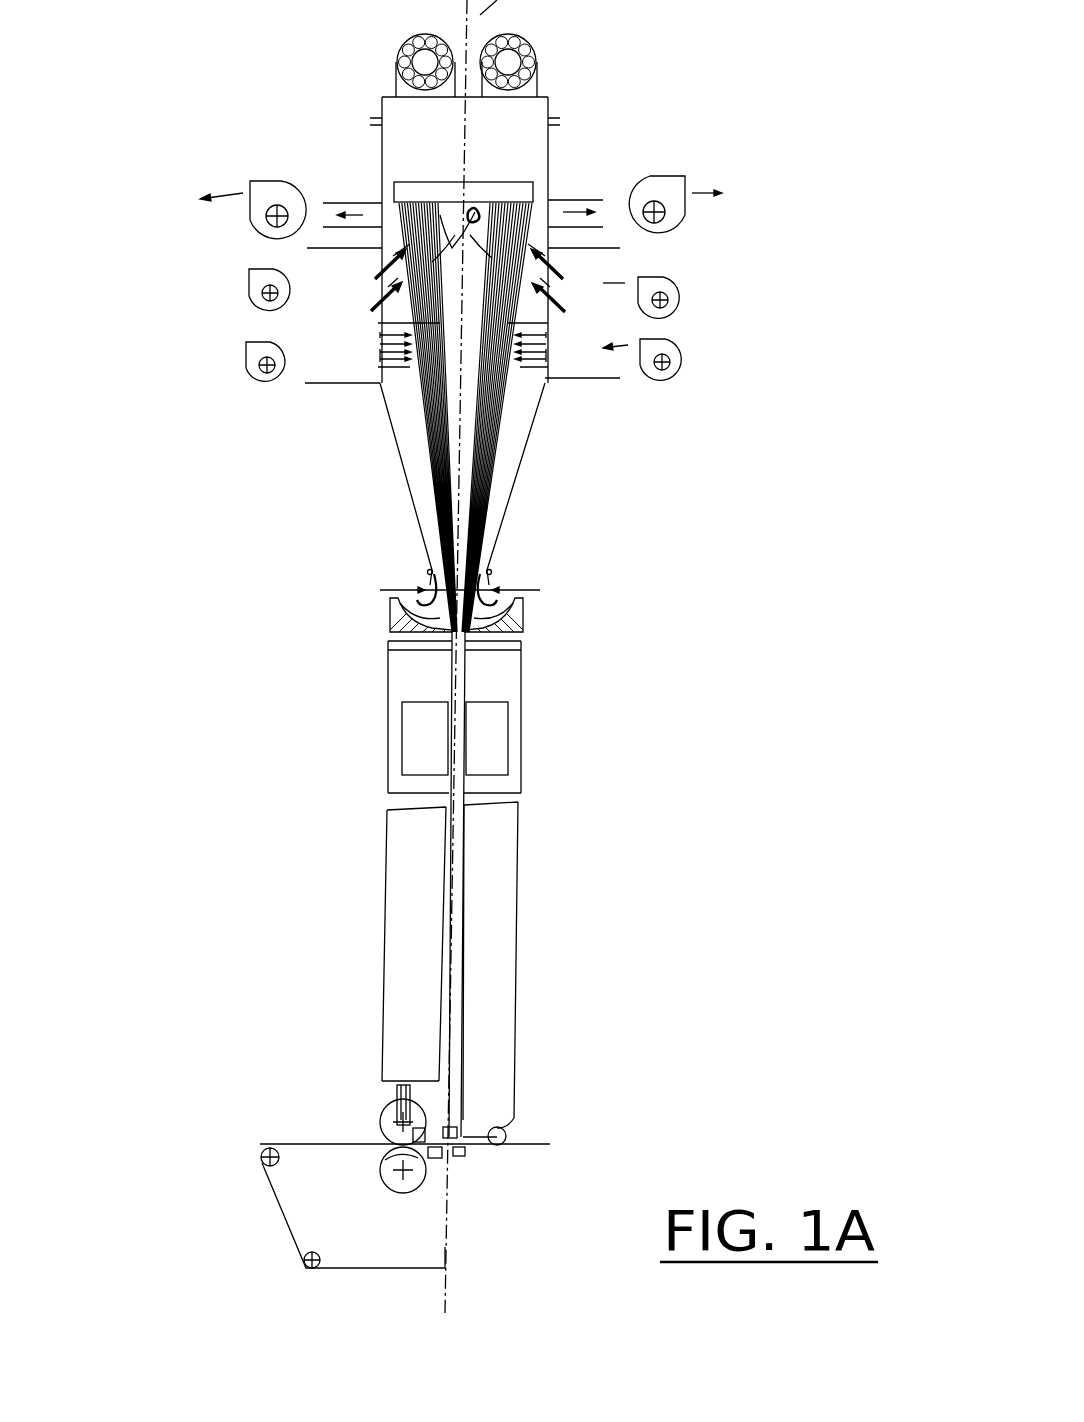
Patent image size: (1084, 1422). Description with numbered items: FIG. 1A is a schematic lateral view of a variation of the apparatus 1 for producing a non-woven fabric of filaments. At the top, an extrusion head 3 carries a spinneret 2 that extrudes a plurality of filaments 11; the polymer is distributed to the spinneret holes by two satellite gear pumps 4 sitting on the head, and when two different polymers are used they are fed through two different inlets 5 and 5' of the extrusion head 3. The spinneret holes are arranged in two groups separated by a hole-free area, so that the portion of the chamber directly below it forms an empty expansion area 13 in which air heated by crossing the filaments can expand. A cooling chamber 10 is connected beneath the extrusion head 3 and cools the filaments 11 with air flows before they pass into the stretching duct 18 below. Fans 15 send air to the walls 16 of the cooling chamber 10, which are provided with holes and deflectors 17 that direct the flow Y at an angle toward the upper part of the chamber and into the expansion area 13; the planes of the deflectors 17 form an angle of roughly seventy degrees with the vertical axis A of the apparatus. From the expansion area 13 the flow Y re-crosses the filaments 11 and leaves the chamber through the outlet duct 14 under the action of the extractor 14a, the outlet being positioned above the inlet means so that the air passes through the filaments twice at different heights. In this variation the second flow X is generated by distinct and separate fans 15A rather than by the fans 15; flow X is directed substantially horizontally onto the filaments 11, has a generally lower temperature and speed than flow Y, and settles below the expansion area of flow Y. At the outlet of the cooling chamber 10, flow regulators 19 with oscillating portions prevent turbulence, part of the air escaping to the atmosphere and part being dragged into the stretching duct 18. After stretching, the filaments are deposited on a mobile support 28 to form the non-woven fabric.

The apparatus 1 is at (228, 503).
The spinneret 2 is at (502, 186).
The extrusion head 3 is at (410, 150).
The satellite gear pumps 4 is at (396, 50).
The inlet 5 is at (593, 82).
The inlet 5' is at (330, 94).
The cooling chamber 10 is at (552, 405).
The filaments 11 is at (380, 268).
The expansion area 13 is at (459, 280).
The outlet duct 14 is at (590, 200).
The extractor 14a is at (253, 188).
The fans 15 is at (253, 287).
The fans 15A is at (257, 357).
The walls 16 is at (380, 330).
The deflectors 17 is at (548, 265).
The stretching duct 18 is at (520, 835).
The flow regulators 19 is at (382, 590).
The mobile support 28 is at (530, 1140).
The vertical axis A is at (450, 1247).
The flow X is at (547, 365).
The flow Y is at (380, 283).